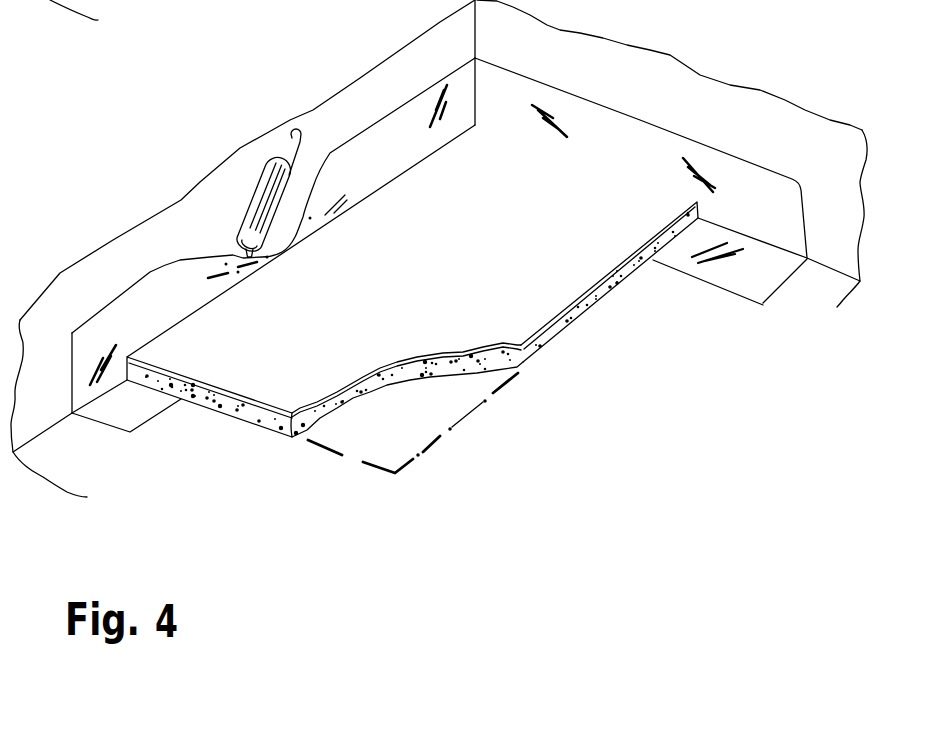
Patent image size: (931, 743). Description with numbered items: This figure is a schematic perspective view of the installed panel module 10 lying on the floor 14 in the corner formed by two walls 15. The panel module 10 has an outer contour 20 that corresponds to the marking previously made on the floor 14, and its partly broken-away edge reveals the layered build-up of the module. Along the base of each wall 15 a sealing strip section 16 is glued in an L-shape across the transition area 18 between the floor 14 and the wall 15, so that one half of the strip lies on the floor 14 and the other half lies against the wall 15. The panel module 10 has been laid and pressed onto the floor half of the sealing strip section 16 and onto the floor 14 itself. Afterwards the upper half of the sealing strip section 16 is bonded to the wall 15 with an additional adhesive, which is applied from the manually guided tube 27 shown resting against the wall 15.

The panel module 10 is at (412, 337).
The floor 14 is at (420, 416).
The wall 15 is at (127, 282).
The sealing strip section 16 is at (110, 413).
The transition area 18 is at (813, 264).
The outer contour 20 is at (342, 455).
The tube 27 is at (250, 212).